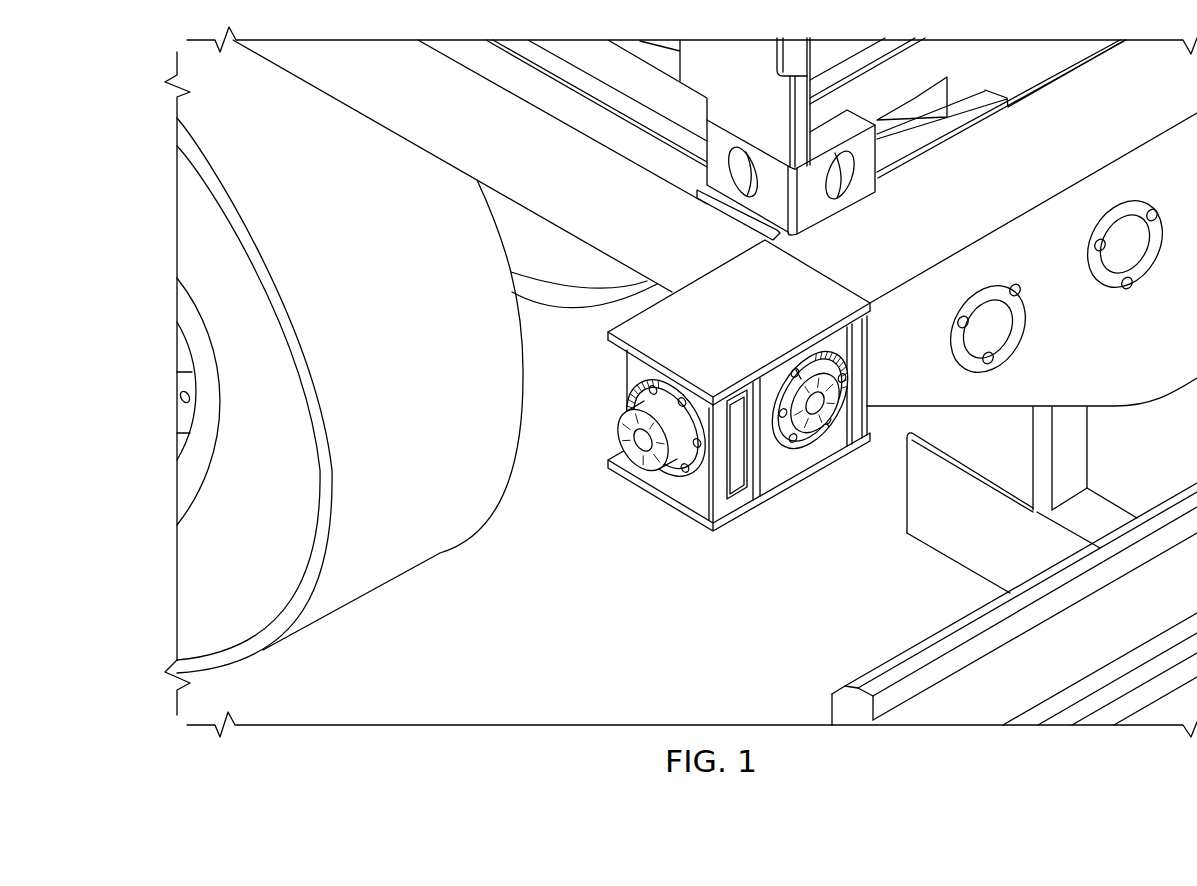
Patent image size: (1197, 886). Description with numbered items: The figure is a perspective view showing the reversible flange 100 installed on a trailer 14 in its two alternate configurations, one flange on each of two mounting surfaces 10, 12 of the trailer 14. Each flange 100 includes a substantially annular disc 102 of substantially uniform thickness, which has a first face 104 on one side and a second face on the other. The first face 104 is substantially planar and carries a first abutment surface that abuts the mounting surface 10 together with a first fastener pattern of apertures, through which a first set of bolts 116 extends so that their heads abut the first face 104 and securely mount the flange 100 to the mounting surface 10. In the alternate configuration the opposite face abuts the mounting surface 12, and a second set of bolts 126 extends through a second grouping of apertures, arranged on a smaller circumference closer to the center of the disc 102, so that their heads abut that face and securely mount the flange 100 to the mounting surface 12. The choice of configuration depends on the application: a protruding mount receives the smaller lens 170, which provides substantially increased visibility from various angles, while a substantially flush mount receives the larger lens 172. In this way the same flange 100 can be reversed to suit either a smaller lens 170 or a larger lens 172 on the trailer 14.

The mounting surface 10 is at (730, 414).
The mounting surface 12 is at (845, 340).
The trailer 14 is at (703, 283).
The reversible flange 100 is at (697, 472).
The annular disc 102 is at (639, 398).
The first face 104 is at (694, 405).
The first set of bolts 116 is at (682, 399).
The second set of bolts 126 is at (782, 407).
The smaller lens 170 is at (820, 405).
The larger lens 172 is at (636, 448).